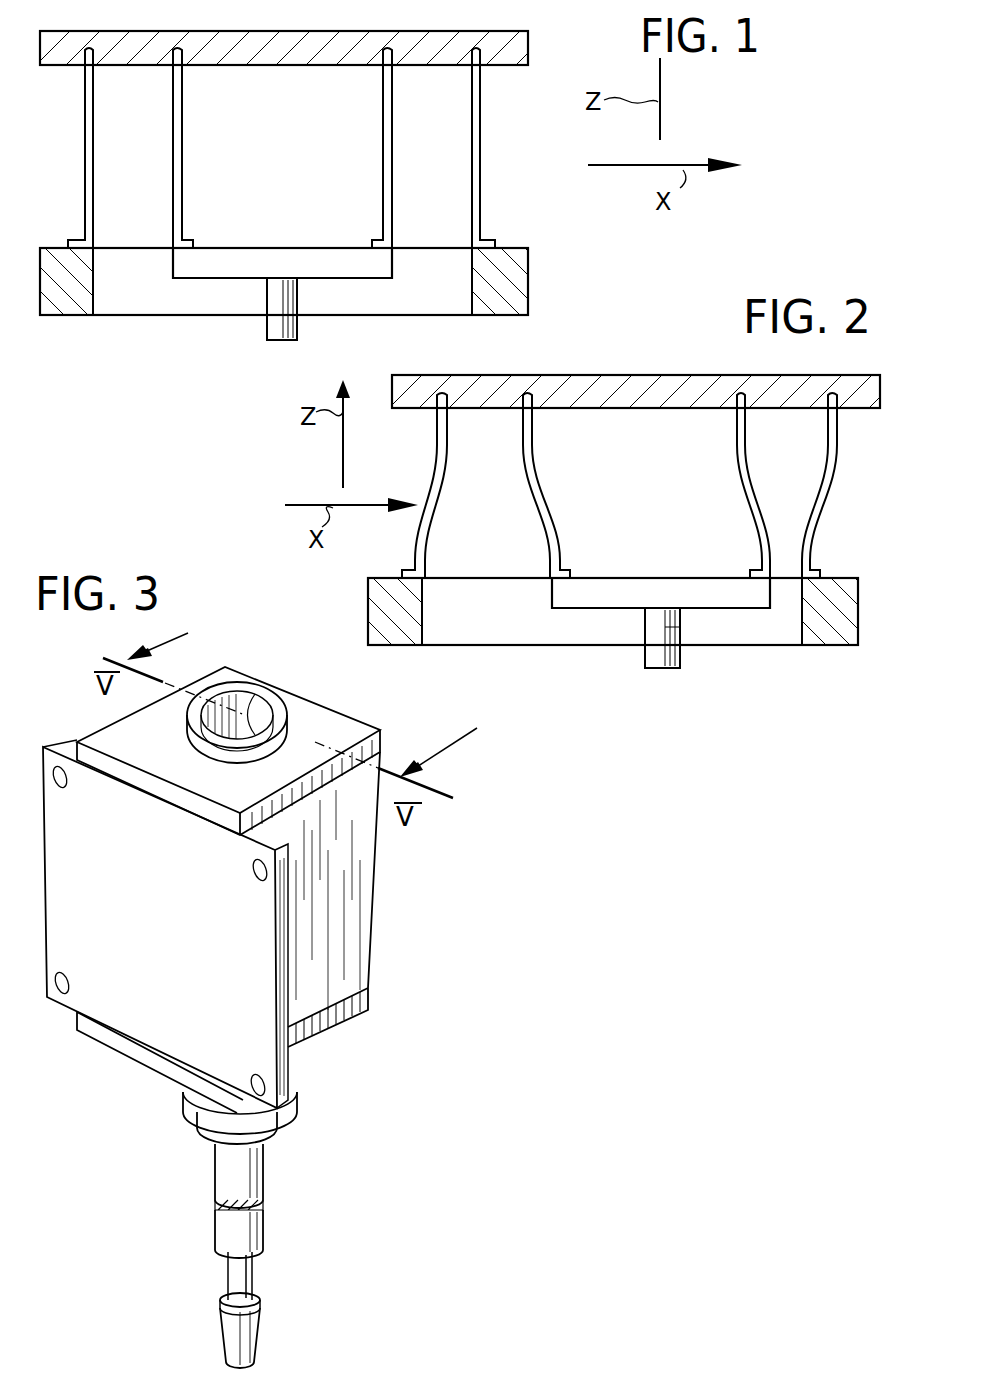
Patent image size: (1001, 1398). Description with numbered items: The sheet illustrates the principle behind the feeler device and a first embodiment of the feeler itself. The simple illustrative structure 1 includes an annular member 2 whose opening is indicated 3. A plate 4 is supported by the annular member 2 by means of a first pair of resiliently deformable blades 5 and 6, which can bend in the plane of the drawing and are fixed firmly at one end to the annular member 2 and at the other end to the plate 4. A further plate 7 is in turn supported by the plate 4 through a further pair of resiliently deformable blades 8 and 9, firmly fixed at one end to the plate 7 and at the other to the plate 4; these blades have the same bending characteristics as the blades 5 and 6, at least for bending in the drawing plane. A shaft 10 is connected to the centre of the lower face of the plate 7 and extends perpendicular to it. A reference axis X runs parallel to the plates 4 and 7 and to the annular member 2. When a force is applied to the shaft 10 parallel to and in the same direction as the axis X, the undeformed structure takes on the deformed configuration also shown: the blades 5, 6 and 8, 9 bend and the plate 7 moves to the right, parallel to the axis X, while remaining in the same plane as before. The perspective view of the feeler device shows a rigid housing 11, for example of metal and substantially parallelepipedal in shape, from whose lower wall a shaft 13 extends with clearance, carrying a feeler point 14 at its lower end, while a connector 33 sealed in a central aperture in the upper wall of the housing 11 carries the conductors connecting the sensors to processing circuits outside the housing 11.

In FIG. 1, the structure 1 is at (545, 80).
In FIG. 2, the structure 1 is at (292, 469).
In FIG. 1, the annular member 2 is at (513, 277).
In FIG. 2, the annular member 2 is at (390, 603).
In FIG. 1, the opening 3 is at (420, 272).
In FIG. 2, the opening 3 is at (522, 615).
In FIG. 1, the plate 4 is at (157, 45).
In FIG. 2, the plate 4 is at (634, 385).
In FIG. 1, the resiliently deformable blade 5 is at (85, 142).
In FIG. 2, the resiliently deformable blade 5 is at (437, 457).
In FIG. 1, the resiliently deformable blade 6 is at (480, 143).
In FIG. 2, the resiliently deformable blade 6 is at (835, 465).
In FIG. 1, the further plate 7 is at (250, 265).
In FIG. 2, the further plate 7 is at (632, 585).
In FIG. 1, the resiliently deformable blade 8 is at (182, 137).
In FIG. 2, the resiliently deformable blade 8 is at (538, 490).
In FIG. 1, the resiliently deformable blade 9 is at (383, 132).
In FIG. 2, the resiliently deformable blade 9 is at (740, 470).
In FIG. 1, the shaft 10 is at (275, 325).
In FIG. 2, the shaft 10 is at (680, 630).
In FIG. 3, the rigid housing 11 is at (348, 893).
In FIG. 3, the shaft 13 is at (252, 1170).
In FIG. 3, the feeler point 14 is at (258, 1330).
In FIG. 3, the connector 33 is at (286, 680).